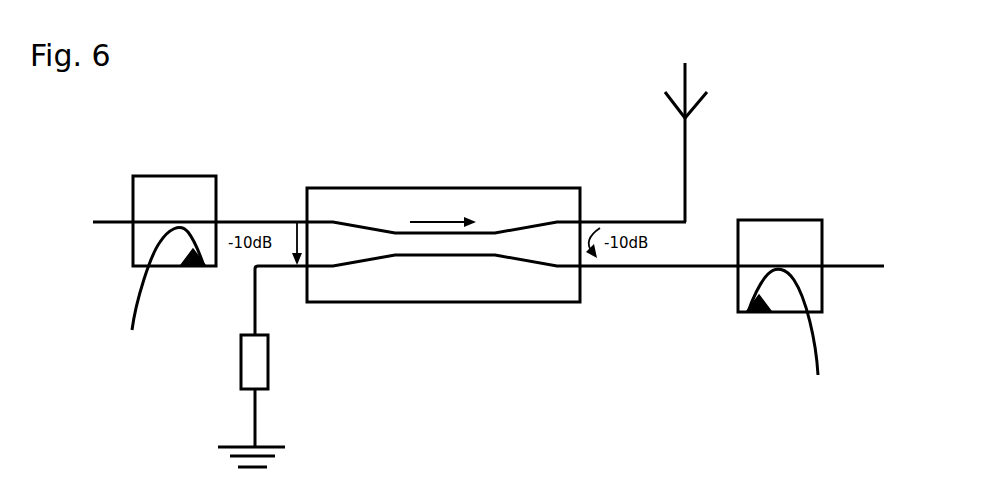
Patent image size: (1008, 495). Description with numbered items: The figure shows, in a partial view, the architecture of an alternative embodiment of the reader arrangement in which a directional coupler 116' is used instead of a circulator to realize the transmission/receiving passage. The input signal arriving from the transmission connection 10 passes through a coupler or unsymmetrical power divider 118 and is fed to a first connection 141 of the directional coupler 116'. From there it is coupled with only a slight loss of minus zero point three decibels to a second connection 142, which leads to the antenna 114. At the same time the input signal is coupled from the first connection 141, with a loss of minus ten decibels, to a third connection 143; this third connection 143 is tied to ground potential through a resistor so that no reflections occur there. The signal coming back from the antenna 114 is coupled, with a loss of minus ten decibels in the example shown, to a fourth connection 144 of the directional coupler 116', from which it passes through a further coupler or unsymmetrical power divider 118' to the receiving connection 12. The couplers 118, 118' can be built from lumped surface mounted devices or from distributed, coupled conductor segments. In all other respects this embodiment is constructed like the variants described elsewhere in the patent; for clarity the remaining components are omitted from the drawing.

The transmission connection 10 is at (100, 218).
The receiving connection 12 is at (862, 262).
The antenna 114 is at (685, 128).
The directional coupler 116' is at (443, 274).
The coupler or unsymmetrical power divider 118 is at (174, 219).
The coupler or unsymmetrical power divider 118' is at (780, 266).
The first connection 141 is at (262, 219).
The second connection 142 is at (628, 218).
The third connection 143 is at (286, 270).
The fourth connection 144 is at (636, 268).